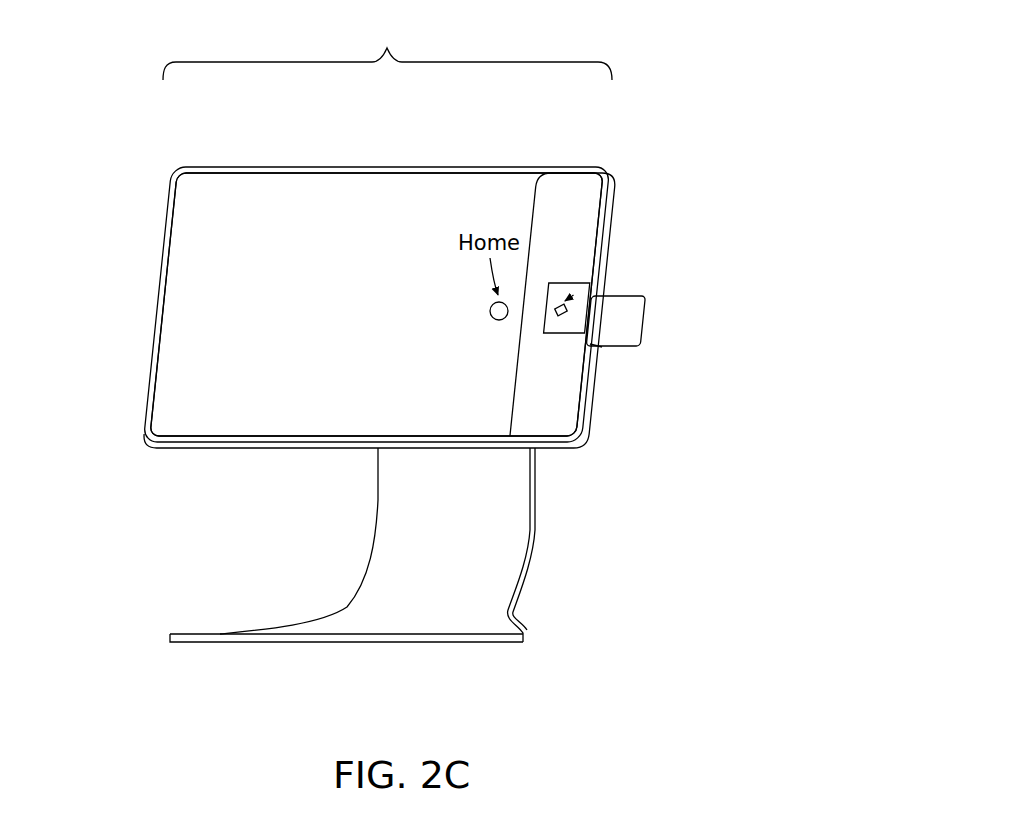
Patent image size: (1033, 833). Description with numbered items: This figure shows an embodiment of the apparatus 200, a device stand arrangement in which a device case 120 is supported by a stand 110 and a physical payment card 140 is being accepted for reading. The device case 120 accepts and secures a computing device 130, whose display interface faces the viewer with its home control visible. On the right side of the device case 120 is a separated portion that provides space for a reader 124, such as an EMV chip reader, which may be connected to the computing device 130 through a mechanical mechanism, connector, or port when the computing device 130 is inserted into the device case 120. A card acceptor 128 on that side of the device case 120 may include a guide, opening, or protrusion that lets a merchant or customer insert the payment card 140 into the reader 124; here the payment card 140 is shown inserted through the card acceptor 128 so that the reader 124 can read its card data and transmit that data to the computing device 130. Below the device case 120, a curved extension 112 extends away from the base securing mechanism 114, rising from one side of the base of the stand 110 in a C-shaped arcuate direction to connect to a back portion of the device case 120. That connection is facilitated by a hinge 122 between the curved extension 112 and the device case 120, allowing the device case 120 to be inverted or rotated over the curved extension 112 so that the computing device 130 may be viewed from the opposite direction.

The apparatus 200 is at (743, 48).
The stand 110 is at (387, 46).
The device case 120 is at (360, 164).
The computing device 130 is at (168, 393).
The hinge 122 is at (540, 456).
The reader 124 is at (577, 290).
The card acceptor 128 is at (598, 350).
The payment card 140 is at (650, 323).
The curved extension 112 is at (538, 530).
The base securing mechanism 114 is at (373, 646).